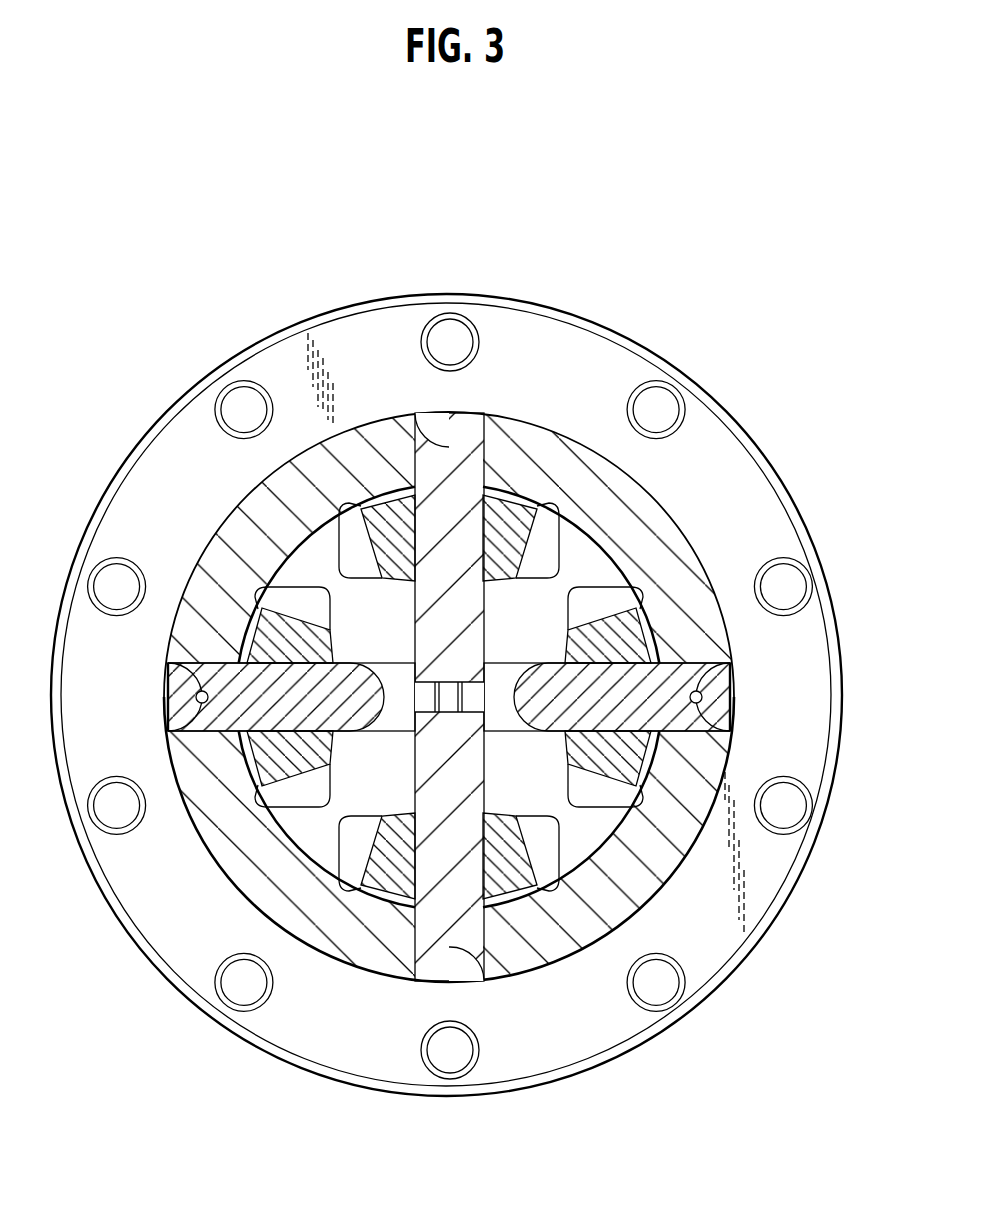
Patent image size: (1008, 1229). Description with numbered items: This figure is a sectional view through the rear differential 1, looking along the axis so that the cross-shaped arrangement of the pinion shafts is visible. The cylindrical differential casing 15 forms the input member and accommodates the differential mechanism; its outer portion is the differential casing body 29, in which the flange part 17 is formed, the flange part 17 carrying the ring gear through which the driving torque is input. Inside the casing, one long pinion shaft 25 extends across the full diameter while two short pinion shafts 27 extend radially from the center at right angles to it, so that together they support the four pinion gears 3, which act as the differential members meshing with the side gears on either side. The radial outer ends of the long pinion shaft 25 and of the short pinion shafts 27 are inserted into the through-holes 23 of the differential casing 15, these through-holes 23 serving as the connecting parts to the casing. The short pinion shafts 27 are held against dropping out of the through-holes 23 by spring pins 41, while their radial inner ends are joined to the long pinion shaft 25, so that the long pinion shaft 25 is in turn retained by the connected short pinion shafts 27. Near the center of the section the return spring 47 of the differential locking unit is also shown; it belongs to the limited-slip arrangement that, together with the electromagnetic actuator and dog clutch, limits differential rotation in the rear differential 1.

The rear differential 1 is at (734, 205).
The pinion gears 3 is at (297, 623).
The differential casing 15 is at (752, 421).
The flange part 17 is at (701, 511).
The through-holes 23 is at (416, 422).
The long pinion shaft 25 is at (420, 561).
The short pinion shafts 27 is at (327, 712).
The differential casing body 29 is at (457, 695).
The spring pins 41 is at (168, 664).
The return spring 47 is at (416, 733).